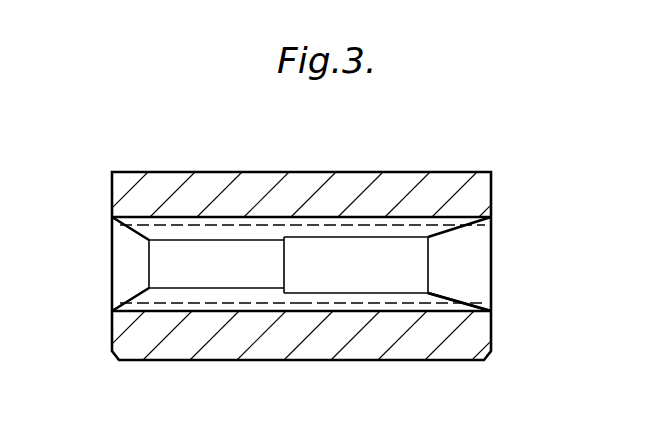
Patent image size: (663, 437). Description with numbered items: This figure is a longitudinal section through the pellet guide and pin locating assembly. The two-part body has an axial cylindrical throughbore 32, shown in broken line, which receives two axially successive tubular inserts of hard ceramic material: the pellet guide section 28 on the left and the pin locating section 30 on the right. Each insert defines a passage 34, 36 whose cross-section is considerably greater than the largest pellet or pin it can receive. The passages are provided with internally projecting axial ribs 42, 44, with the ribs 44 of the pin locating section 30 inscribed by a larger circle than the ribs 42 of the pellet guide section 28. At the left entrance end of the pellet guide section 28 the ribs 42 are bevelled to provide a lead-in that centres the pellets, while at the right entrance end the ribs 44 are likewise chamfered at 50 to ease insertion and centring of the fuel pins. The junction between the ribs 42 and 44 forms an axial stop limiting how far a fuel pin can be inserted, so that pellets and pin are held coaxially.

The pellet guide section 28 is at (209, 306).
The pin locating section 30 is at (365, 310).
The axial cylindrical throughbore 32 is at (176, 226).
The passage 34 is at (263, 278).
The passage 36 is at (330, 248).
The axial ribs 42 is at (149, 246).
The axial ribs 44 is at (400, 292).
The chamfer 50 is at (453, 300).